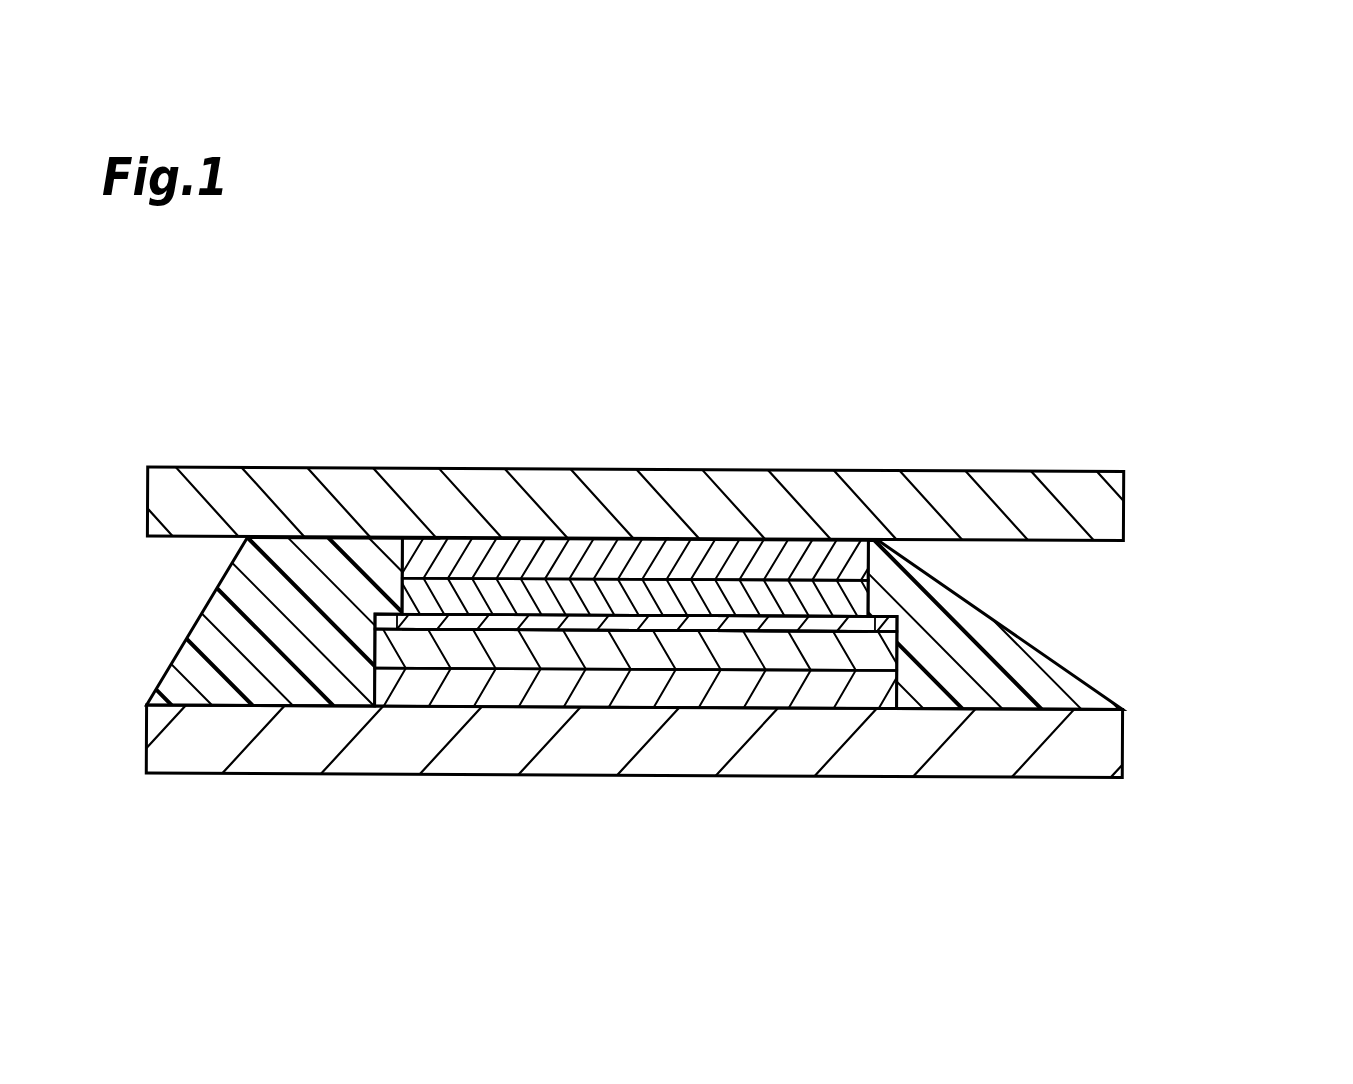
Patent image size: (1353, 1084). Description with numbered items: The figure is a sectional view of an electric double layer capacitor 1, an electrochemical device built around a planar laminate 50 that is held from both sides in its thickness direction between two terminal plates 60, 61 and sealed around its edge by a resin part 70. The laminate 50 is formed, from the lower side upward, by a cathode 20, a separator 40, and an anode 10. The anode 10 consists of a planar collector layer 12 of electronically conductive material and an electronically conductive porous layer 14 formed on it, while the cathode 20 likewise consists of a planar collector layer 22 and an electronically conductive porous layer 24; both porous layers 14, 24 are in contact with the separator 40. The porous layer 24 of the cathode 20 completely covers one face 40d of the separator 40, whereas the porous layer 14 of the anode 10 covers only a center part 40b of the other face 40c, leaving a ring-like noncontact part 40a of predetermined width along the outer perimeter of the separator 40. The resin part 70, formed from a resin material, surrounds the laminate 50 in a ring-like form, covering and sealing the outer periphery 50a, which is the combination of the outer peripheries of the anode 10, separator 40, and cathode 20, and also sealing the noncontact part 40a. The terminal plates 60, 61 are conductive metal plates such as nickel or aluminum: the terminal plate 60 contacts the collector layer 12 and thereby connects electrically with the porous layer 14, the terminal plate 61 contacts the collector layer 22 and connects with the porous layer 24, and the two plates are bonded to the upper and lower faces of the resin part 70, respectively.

The electric double layer capacitor 1 is at (1062, 358).
The anode 10 is at (844, 572).
The collector layer 12 is at (868, 556).
The porous layer 14 is at (868, 594).
The cathode 20 is at (812, 670).
The collector layer 22 is at (897, 690).
The porous layer 24 is at (897, 646).
The separator 40 is at (821, 651).
The noncontact part 40a is at (396, 612).
The center part 40b is at (599, 617).
The other face 40c is at (862, 828).
The one face 40d is at (500, 630).
The laminate 50 is at (802, 651).
The outer periphery 50a is at (398, 540).
The terminal plate 60 is at (1125, 500).
The terminal plate 61 is at (1120, 775).
The resin part 70 is at (203, 612).